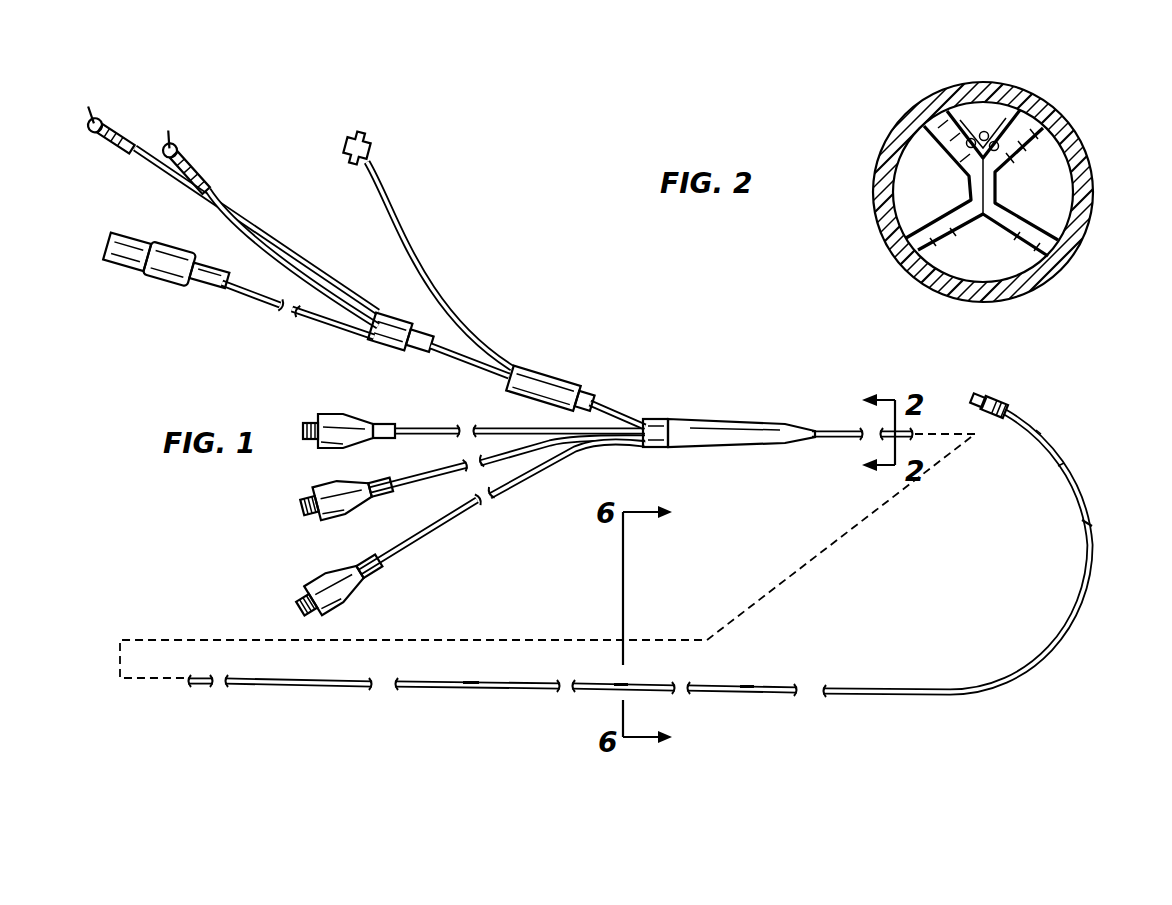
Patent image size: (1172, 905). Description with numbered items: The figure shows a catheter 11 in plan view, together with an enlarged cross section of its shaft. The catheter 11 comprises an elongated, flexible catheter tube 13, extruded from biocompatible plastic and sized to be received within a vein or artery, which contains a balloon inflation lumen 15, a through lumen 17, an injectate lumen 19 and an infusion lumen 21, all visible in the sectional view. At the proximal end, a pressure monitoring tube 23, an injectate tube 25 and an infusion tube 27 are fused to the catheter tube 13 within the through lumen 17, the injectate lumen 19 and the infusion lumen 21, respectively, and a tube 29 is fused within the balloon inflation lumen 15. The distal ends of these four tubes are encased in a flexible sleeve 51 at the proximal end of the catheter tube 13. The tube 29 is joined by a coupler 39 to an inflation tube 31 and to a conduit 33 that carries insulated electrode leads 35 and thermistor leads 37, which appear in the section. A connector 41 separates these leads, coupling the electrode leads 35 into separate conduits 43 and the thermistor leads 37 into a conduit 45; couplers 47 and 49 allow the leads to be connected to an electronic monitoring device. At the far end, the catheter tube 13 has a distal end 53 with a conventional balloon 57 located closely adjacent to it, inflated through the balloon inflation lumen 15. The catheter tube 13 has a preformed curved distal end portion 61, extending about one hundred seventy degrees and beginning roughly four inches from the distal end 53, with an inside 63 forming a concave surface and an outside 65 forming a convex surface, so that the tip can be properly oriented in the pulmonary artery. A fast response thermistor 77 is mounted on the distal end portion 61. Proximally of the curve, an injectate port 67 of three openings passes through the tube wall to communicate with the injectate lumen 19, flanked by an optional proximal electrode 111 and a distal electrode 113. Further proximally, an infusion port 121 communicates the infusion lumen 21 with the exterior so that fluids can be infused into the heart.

In FIG. 1, the catheter 11 is at (505, 272).
In FIG. 1, the catheter tube 13 is at (855, 431).
In FIG. 2, the balloon inflation lumen 15 is at (970, 118).
In FIG. 2, the through lumen 17 is at (1047, 185).
In FIG. 2, the injectate lumen 19 is at (1007, 263).
In FIG. 2, the infusion lumen 21 is at (913, 157).
In FIG. 1, the pressure monitoring tube 23 is at (428, 403).
In FIG. 1, the injectate tube 25 is at (428, 460).
In FIG. 1, the infusion tube 27 is at (428, 513).
In FIG. 1, the tube 29 is at (626, 418).
In FIG. 1, the inflation tube 31 is at (394, 192).
In FIG. 1, the conduit 33 is at (446, 357).
In FIG. 2, the electrode leads 35 is at (984, 130).
In FIG. 2, the thermistor leads 37 is at (958, 152).
In FIG. 1, the coupler 39 is at (542, 388).
In FIG. 1, the connector 41 is at (396, 320).
In FIG. 1, the conduits 43 is at (212, 195).
In FIG. 1, the conduit 45 is at (250, 294).
In FIG. 1, the couplers 47 is at (103, 126).
In FIG. 1, the coupler 49 is at (158, 272).
In FIG. 1, the flexible sleeve 51 is at (728, 424).
In FIG. 1, the distal end 53 is at (966, 397).
In FIG. 1, the balloon 57 is at (992, 404).
In FIG. 1, the curved distal end portion 61 is at (1088, 572).
In FIG. 1, the inside 63 is at (1057, 463).
In FIG. 1, the outside 65 is at (1038, 432).
In FIG. 1, the injectate port 67 is at (622, 688).
In FIG. 1, the thermistor 77 is at (1083, 523).
In FIG. 1, the proximal electrode 111 is at (473, 688).
In FIG. 1, the distal electrode 113 is at (747, 691).
In FIG. 1, the infusion port 121 is at (300, 682).